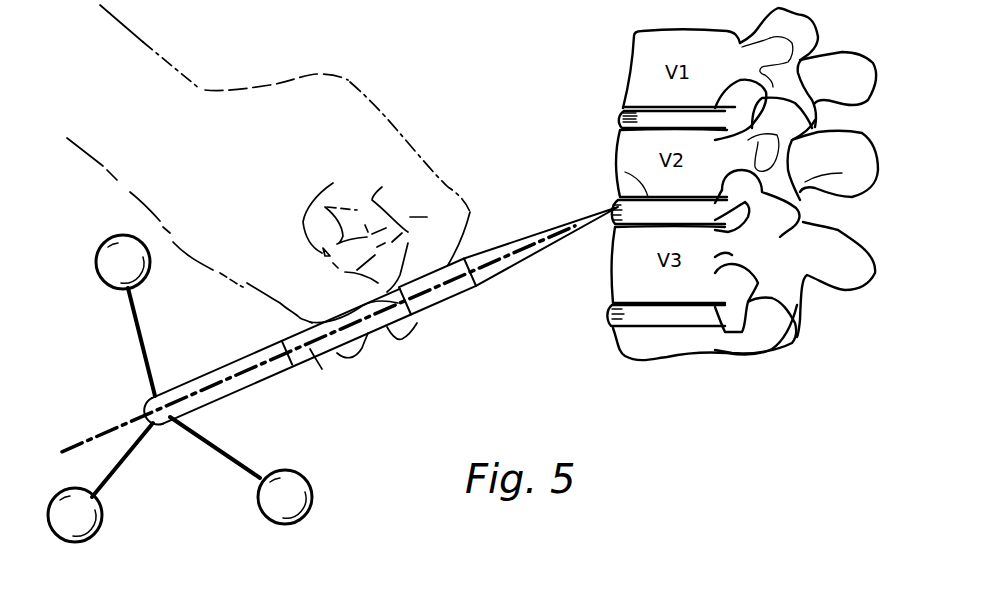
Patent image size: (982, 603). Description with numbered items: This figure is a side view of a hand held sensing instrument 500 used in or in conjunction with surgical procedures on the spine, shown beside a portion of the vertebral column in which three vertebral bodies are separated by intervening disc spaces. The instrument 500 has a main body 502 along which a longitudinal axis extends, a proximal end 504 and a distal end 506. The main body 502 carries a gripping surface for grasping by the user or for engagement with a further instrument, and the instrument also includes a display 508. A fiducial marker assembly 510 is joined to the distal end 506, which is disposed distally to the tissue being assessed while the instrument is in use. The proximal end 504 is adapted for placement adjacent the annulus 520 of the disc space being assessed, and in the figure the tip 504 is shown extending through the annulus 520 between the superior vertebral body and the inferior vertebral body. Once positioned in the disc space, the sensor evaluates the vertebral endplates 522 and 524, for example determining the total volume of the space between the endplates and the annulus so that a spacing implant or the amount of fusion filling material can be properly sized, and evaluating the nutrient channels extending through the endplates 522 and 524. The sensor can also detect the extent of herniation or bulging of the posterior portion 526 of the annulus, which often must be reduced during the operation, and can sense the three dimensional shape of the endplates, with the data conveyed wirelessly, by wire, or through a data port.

The sensing instrument 500 is at (435, 352).
The main body 502 is at (317, 353).
The proximal end 504 is at (584, 221).
The distal end 506 is at (237, 373).
The display 508 is at (473, 273).
The fiducial marker assembly 510 is at (258, 500).
The annulus 520 is at (618, 207).
The vertebral endplate 522 is at (620, 196).
The vertebral endplate 524 is at (630, 226).
The posterior portion of the annulus 526 is at (735, 233).